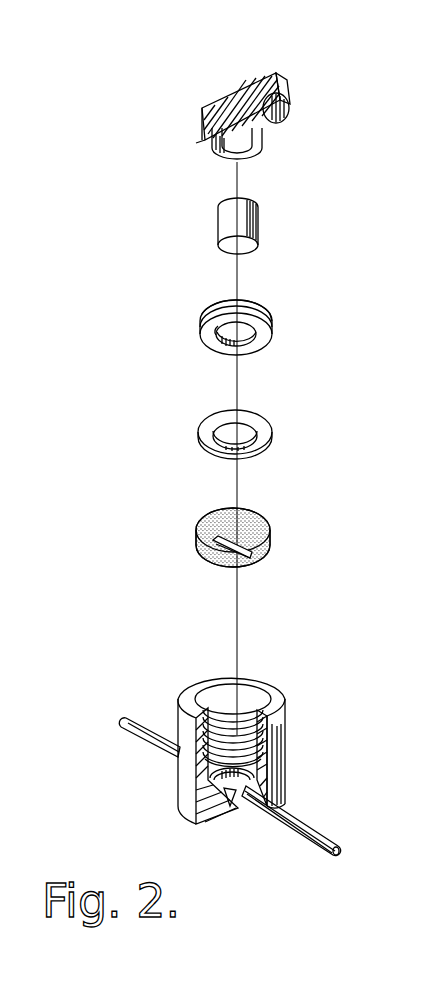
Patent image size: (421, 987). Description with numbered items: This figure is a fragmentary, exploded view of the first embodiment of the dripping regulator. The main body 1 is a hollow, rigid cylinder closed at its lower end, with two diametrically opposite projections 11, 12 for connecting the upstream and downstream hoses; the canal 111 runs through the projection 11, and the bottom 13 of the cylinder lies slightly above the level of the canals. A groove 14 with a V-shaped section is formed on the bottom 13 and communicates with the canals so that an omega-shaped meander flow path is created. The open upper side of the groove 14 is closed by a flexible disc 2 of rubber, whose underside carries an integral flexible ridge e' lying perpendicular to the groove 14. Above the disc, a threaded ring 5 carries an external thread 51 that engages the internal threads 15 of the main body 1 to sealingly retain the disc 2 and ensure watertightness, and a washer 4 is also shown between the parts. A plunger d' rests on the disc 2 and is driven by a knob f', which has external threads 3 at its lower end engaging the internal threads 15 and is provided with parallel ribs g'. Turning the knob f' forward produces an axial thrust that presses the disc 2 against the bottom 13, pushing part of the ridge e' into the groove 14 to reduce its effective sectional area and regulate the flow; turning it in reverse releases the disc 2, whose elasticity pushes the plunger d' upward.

The knob f' is at (243, 90).
The parallel ribs g' is at (289, 108).
The external threads 3 is at (283, 138).
The plunger d' is at (255, 226).
The threaded ring 5 is at (272, 322).
The thread 51 is at (206, 323).
The washer 4 is at (263, 428).
The flexible disc 2 is at (265, 530).
The ridge e' is at (222, 566).
The main body 1 is at (268, 692).
The internal threads 15 is at (210, 692).
The bottom 13 is at (216, 776).
The projection 12 is at (144, 730).
The projection 11 is at (318, 830).
The canal 111 is at (336, 854).
The groove 14 is at (230, 803).